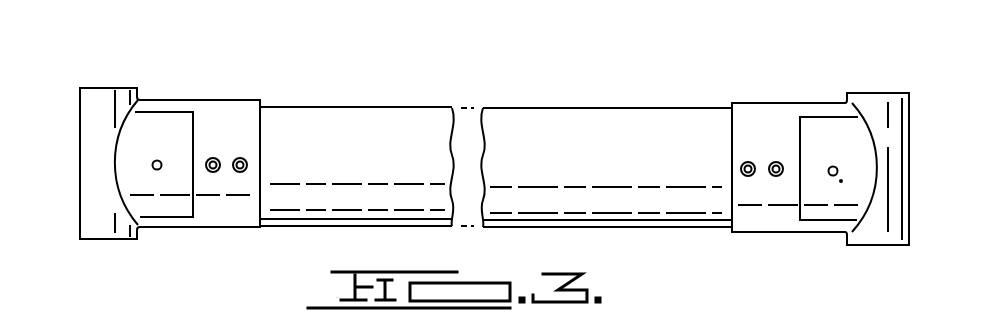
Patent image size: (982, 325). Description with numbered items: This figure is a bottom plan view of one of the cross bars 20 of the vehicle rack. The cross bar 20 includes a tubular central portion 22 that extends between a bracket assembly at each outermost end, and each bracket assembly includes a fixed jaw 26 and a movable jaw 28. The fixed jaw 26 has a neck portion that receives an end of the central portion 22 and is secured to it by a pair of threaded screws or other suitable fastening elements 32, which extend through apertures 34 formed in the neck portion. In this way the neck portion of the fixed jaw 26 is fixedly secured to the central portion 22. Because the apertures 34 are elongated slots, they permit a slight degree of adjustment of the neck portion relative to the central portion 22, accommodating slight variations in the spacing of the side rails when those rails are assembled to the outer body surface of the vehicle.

The cross bar 20 is at (612, 97).
The tubular central portion 22 is at (405, 118).
The fixed jaw 26 is at (149, 99).
The movable jaw 28 is at (178, 109).
The fastening elements 32 is at (215, 158).
The apertures 34 is at (240, 172).